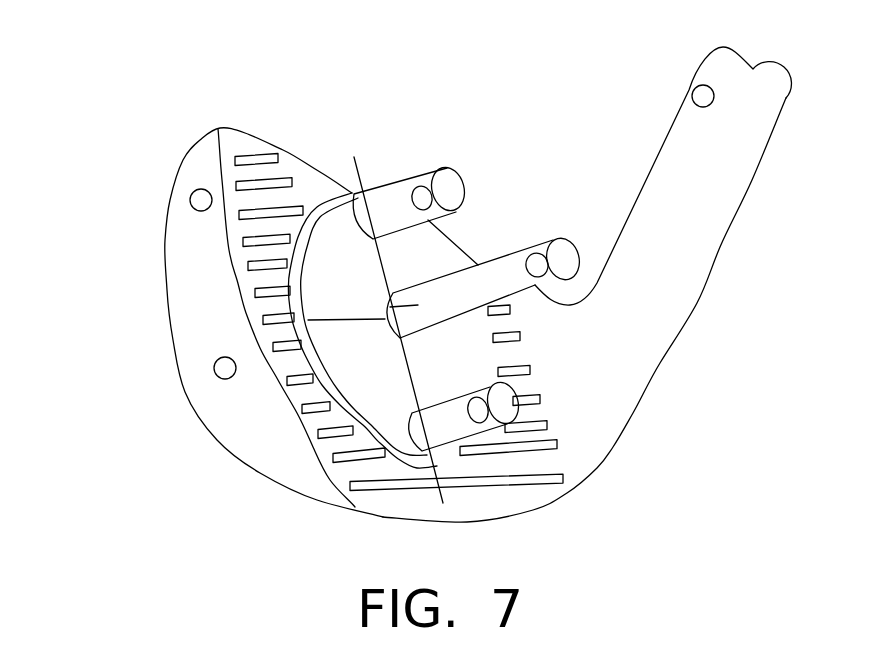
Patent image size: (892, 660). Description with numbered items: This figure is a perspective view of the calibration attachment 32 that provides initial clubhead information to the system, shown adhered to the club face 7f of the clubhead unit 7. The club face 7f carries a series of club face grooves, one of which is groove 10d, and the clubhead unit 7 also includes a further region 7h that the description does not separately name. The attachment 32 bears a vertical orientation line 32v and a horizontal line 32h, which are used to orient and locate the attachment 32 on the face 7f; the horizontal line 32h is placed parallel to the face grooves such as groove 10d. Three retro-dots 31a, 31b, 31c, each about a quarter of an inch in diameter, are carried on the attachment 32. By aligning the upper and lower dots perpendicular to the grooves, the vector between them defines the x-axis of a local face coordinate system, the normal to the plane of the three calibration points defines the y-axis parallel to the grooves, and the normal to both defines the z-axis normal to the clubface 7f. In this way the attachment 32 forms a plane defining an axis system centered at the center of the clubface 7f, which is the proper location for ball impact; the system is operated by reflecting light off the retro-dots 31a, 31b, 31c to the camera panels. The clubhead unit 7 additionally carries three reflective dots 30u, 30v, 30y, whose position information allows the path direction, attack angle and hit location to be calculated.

The clubhead unit 7 is at (248, 128).
The club face 7f is at (303, 185).
The arm of body 7h is at (686, 240).
The club face groove 10d is at (252, 264).
The reflective dot 30v is at (194, 193).
The reflective dot 30u is at (214, 369).
The reflective dot 30y is at (692, 96).
The retro-dot 31a is at (420, 187).
The retro-dot 31b is at (535, 254).
The retro-dot 31c is at (479, 398).
The attachment 32 is at (422, 258).
The vertical orientation line 32v is at (364, 168).
The horizontal line 32h is at (348, 320).